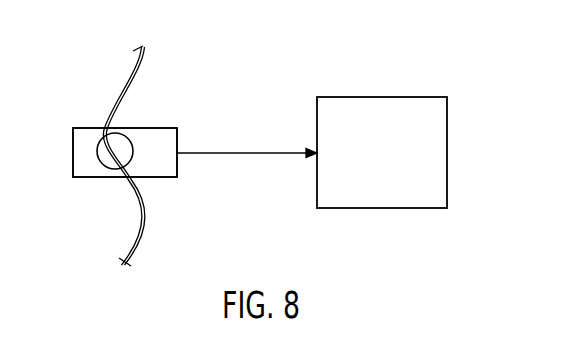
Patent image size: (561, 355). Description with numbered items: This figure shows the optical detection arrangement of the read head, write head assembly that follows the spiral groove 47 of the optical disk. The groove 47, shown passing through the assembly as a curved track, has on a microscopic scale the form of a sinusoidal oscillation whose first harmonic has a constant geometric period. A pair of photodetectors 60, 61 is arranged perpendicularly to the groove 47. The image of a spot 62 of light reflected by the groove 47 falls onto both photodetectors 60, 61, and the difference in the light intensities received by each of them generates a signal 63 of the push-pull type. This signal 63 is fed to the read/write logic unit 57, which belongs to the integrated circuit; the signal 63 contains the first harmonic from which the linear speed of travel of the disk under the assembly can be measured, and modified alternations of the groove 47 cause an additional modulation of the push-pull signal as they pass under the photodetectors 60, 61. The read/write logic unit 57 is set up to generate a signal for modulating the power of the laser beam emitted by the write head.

The spiral groove 47 is at (147, 228).
The read/write logic unit 57 is at (382, 93).
The photodetector 60 is at (85, 127).
The photodetector 61 is at (165, 127).
The spot 62 is at (103, 164).
The signal 63 is at (247, 148).